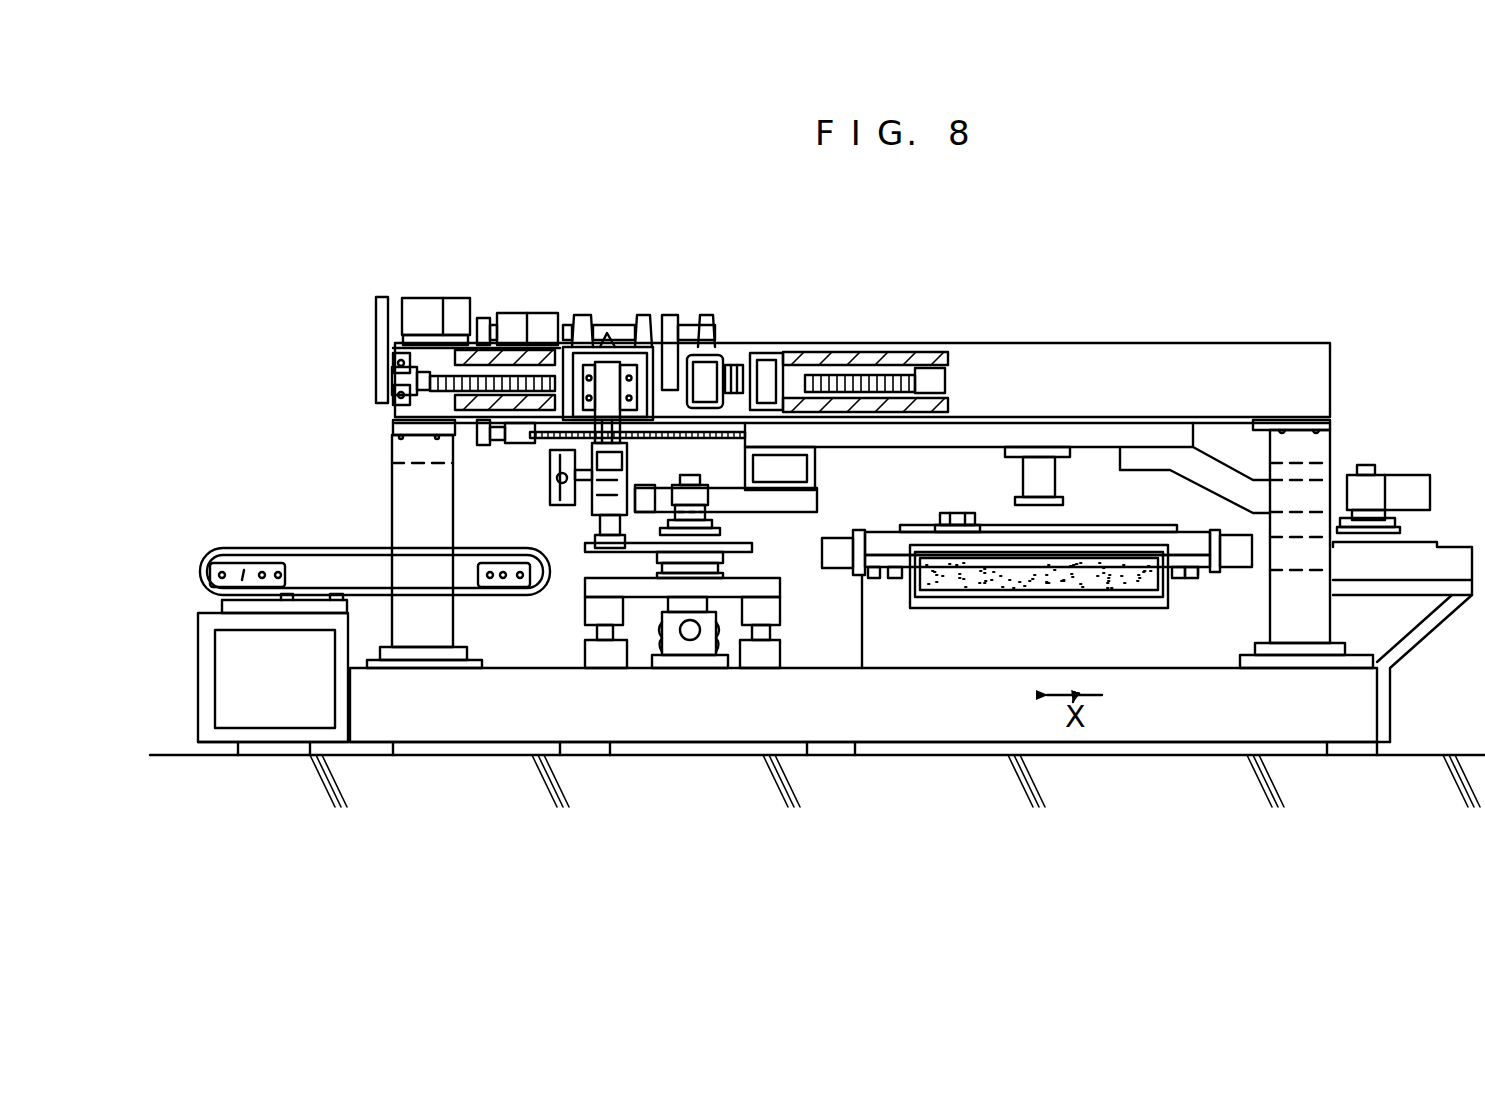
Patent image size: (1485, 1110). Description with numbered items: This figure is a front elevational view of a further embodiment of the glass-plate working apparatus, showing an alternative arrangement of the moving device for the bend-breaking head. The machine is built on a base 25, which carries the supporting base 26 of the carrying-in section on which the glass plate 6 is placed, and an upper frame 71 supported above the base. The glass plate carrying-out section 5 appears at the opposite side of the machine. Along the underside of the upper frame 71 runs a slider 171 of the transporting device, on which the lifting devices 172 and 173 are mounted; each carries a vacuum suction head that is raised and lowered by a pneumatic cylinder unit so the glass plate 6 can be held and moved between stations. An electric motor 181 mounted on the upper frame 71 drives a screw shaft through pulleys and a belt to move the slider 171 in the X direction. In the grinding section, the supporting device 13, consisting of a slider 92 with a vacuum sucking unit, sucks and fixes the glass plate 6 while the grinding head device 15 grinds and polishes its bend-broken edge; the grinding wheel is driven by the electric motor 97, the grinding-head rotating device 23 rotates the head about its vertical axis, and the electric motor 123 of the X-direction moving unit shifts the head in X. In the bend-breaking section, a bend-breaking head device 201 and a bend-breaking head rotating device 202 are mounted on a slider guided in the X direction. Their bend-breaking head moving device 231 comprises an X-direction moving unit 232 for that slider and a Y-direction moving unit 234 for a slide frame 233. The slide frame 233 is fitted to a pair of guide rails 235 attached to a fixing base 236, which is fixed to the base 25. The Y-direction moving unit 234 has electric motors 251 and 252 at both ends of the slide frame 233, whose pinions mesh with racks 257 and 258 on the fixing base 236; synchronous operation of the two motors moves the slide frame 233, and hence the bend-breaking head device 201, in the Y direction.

The glass plate carrying-out section 5 is at (343, 540).
The glass plate 6 is at (1052, 558).
The supporting device 13 is at (737, 562).
The grinding head device 15 is at (590, 525).
The grinding-head rotating device 23 is at (735, 340).
The base 25 is at (1368, 678).
The supporting base 26 is at (1450, 548).
The upper frame 71 is at (1115, 345).
The slider 92 is at (777, 588).
The electric motor 97 is at (628, 493).
The electric motor 123 is at (428, 299).
The slider 171 is at (838, 447).
The lifting device 172 is at (1387, 473).
The lifting device 173 is at (1062, 476).
The electric motor 181 is at (541, 318).
The bend-breaking head device 201 is at (946, 500).
The bend-breaking head rotating device 202 is at (969, 500).
The bend-breaking head moving device 231 is at (933, 515).
The X-direction moving unit 232 is at (992, 517).
The slide frame 233 is at (1178, 540).
The Y-direction moving unit 234 is at (818, 541).
The guide rails 235 is at (895, 578).
The fixing base 236 is at (973, 665).
The electric motor 251 is at (838, 541).
The electric motor 252 is at (1273, 570).
The rack 257 is at (867, 578).
The rack 258 is at (1200, 578).